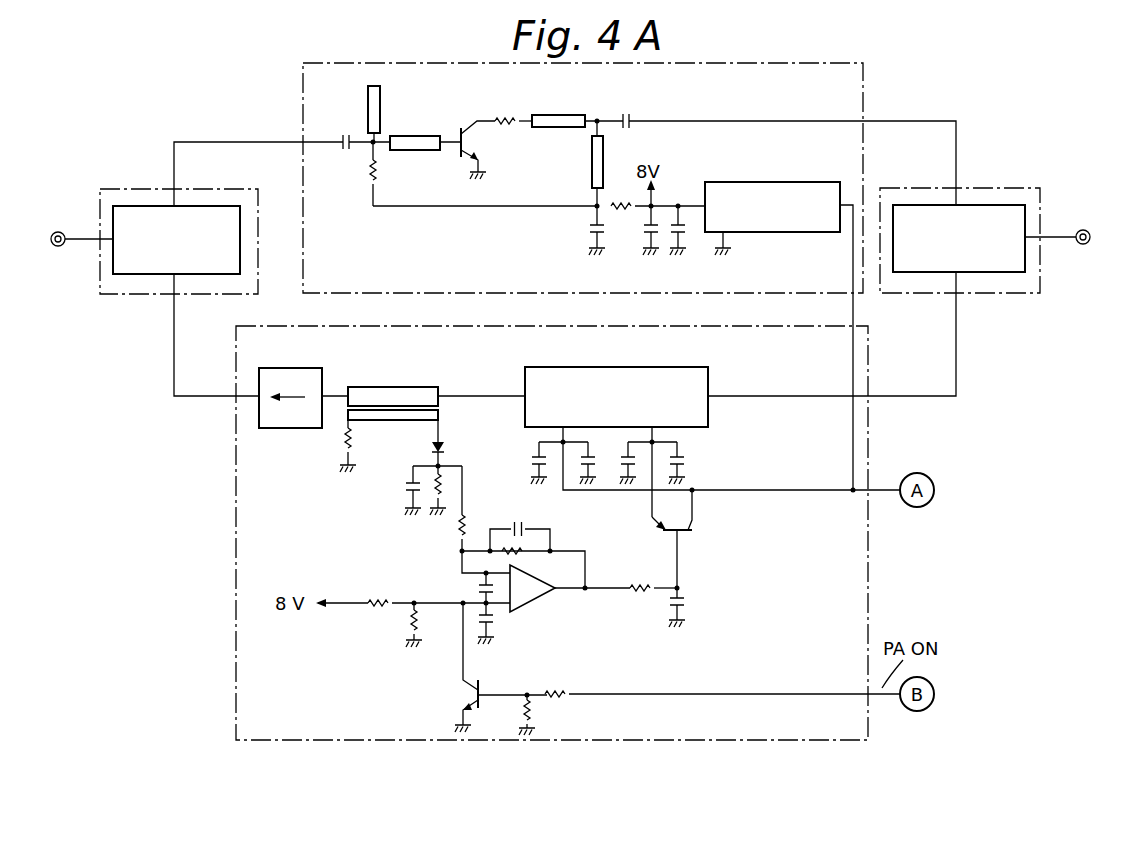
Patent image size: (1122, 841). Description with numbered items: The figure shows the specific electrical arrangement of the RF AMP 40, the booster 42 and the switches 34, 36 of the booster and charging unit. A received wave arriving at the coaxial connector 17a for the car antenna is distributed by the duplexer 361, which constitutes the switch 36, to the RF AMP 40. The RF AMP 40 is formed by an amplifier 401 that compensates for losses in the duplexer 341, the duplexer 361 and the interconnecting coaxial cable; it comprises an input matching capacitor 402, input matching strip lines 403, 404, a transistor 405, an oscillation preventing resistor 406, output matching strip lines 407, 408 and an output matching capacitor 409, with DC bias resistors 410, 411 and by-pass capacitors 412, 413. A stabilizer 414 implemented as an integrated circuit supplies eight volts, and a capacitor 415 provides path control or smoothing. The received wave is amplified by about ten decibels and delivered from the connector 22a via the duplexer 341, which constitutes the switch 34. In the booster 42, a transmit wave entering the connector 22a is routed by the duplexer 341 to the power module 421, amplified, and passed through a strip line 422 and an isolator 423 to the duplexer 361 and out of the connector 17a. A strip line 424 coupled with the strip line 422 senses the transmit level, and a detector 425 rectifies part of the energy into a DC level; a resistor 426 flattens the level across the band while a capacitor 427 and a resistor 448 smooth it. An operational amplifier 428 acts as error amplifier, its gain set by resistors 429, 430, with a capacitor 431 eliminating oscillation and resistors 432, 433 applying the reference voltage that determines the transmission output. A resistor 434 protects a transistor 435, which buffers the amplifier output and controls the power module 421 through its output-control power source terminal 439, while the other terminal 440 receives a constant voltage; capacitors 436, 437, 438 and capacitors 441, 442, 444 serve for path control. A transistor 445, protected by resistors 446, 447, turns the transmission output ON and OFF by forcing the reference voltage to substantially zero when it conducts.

The RF AMP 40 is at (865, 88).
The switch 36 is at (118, 297).
The duplexer 361 is at (126, 204).
The coaxial connector 17a is at (56, 232).
The switch 34 is at (1017, 295).
The duplexer 341 is at (1003, 205).
The coaxial connector 22a is at (1085, 230).
The amplifier 401 is at (478, 232).
The input matching capacitor 402 is at (343, 150).
The input matching strip line 403 is at (381, 98).
The input matching strip line 404 is at (418, 136).
The transistor 405 is at (460, 155).
The oscillation preventing resistor 406 is at (505, 116).
The output matching strip line 407 is at (560, 115).
The output matching strip line 408 is at (606, 162).
The output matching capacitor 409 is at (627, 112).
The DC bias resistor 410 is at (367, 178).
The DC bias resistor 411 is at (605, 238).
The capacitor 412 is at (582, 228).
The capacitor 413 is at (643, 250).
The stabilizer 414 is at (770, 182).
The capacitor 415 is at (688, 245).
The booster 42 is at (236, 500).
The power module 421 is at (627, 367).
The strip line 422 is at (398, 387).
The isolator 423 is at (292, 368).
The strip line 424 is at (385, 421).
The detector 425 is at (443, 445).
The resistor 426 is at (345, 447).
The capacitor 427 is at (405, 487).
The operational amplifier 428 is at (540, 597).
The resistor 429 is at (492, 513).
The resistor 430 is at (522, 545).
The capacitor 431 is at (519, 522).
The resistor 432 is at (371, 608).
The resistor 433 is at (421, 625).
The resistor 434 is at (648, 582).
The transistor 435 is at (690, 535).
The capacitor 436 is at (496, 625).
The capacitor 437 is at (479, 588).
The capacitor 438 is at (688, 603).
The power source terminal 439 is at (660, 441).
The power source terminal 440 is at (539, 443).
The capacitor 441 is at (690, 462).
The capacitor 442 is at (640, 462).
The capacitor 444 is at (533, 461).
The transistor 445 is at (481, 686).
The resistor 446 is at (560, 687).
The resistor 447 is at (536, 712).
The resistor 448 is at (432, 500).